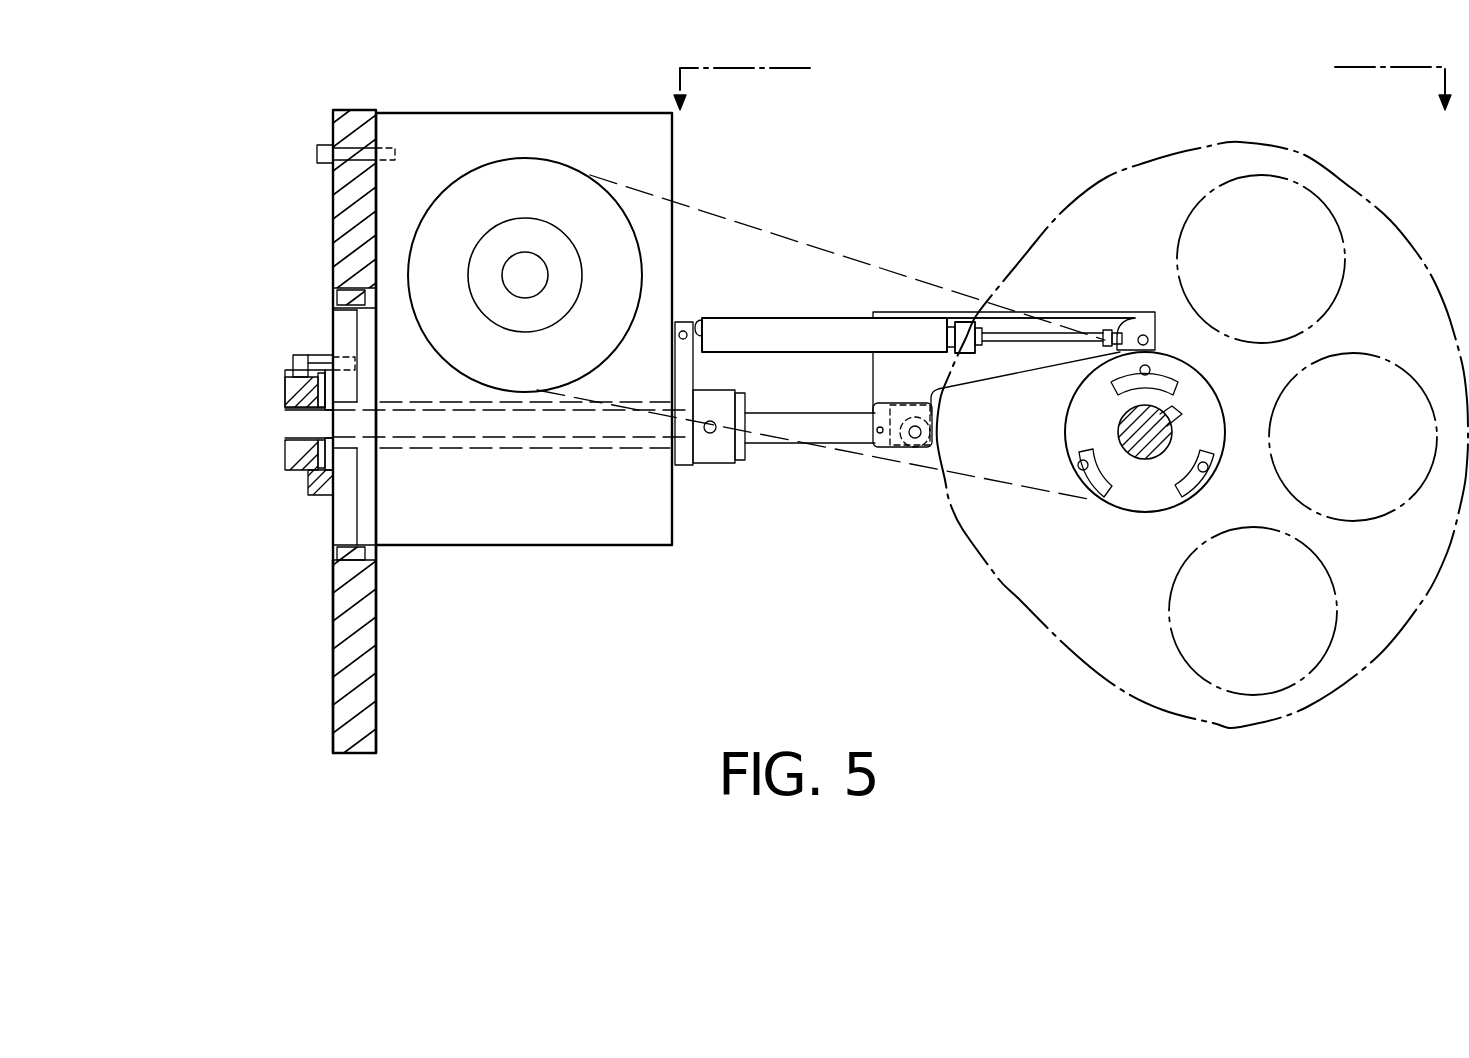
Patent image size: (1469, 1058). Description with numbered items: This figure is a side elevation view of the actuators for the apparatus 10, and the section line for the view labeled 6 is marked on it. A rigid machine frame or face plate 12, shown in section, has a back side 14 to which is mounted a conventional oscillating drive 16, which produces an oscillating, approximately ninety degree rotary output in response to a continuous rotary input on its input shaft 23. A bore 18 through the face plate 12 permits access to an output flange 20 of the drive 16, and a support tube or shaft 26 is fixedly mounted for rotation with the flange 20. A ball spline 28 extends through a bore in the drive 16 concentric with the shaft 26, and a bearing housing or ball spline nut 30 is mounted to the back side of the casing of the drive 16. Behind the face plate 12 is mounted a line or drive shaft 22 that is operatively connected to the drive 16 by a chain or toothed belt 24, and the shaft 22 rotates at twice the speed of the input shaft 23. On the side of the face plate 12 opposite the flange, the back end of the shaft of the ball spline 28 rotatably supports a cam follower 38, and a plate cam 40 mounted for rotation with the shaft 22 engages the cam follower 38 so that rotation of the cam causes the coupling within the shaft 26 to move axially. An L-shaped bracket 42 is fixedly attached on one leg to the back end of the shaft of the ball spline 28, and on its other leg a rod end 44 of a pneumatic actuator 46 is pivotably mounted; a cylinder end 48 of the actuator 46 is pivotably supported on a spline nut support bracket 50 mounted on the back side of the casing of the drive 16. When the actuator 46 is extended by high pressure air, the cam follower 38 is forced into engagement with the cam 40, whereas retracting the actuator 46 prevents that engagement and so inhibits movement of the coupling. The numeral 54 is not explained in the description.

The apparatus 10 is at (280, 214).
The face plate 12 is at (358, 667).
The back side 14 is at (377, 615).
The oscillating drive 16 is at (485, 115).
The bore 18 is at (377, 556).
The output flange 20 is at (345, 480).
The drive shaft 22 is at (1140, 442).
The input shaft 23 is at (520, 262).
The toothed belt 24 is at (896, 460).
The support tube 26 is at (288, 385).
The ball spline 28 is at (305, 425).
The ball spline nut 30 is at (717, 458).
The cam follower 38 is at (934, 428).
The plate cam 40 is at (1112, 175).
The L-shaped bracket 42 is at (886, 370).
The rod end 44 is at (1115, 341).
The pneumatic actuator 46 is at (804, 326).
The cylinder end 48 is at (710, 320).
The spline nut support bracket 50 is at (686, 470).
The wall surface 54 is at (334, 650).
The section line 6- 6 is at (1063, 110).